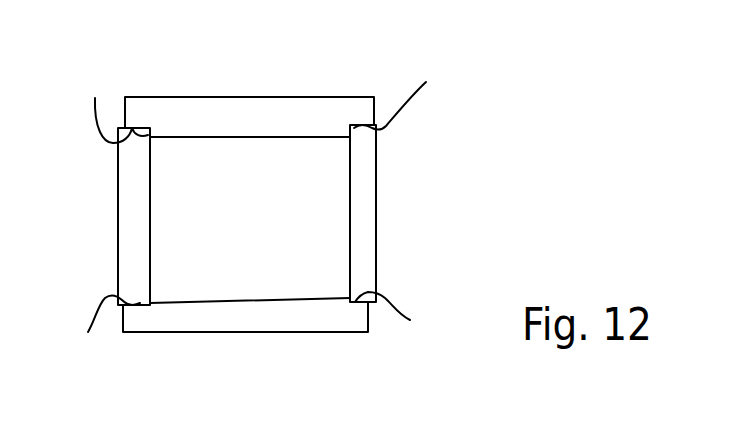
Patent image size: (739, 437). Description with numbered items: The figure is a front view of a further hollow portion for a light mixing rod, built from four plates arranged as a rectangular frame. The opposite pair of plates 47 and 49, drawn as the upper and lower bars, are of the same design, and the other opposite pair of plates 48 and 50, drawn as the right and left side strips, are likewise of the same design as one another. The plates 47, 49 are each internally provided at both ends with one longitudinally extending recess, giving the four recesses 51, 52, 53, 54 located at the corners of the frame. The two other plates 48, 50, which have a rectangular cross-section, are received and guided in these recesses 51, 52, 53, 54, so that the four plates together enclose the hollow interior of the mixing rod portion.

The plate 47 is at (252, 97).
The plate 48 is at (376, 221).
The plate 49 is at (250, 333).
The plate 50 is at (117, 247).
The longitudinally extending recess 51 is at (414, 92).
The longitudinally extending recess 52 is at (105, 100).
The longitudinally extending recess 53 is at (406, 321).
The longitudinally extending recess 54 is at (83, 331).